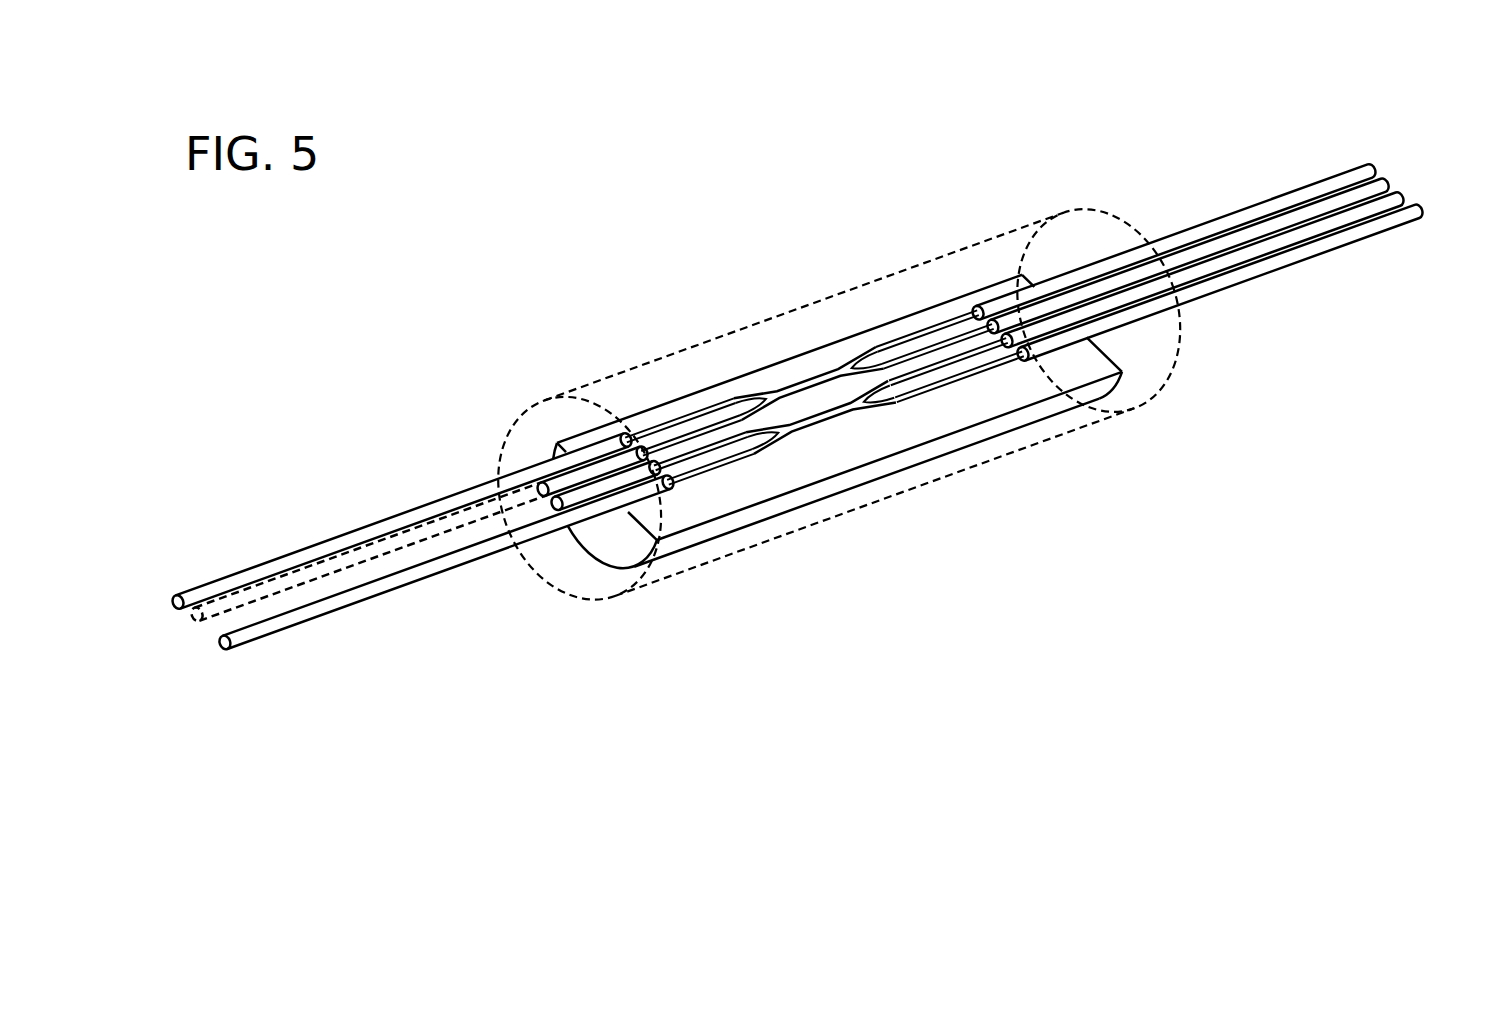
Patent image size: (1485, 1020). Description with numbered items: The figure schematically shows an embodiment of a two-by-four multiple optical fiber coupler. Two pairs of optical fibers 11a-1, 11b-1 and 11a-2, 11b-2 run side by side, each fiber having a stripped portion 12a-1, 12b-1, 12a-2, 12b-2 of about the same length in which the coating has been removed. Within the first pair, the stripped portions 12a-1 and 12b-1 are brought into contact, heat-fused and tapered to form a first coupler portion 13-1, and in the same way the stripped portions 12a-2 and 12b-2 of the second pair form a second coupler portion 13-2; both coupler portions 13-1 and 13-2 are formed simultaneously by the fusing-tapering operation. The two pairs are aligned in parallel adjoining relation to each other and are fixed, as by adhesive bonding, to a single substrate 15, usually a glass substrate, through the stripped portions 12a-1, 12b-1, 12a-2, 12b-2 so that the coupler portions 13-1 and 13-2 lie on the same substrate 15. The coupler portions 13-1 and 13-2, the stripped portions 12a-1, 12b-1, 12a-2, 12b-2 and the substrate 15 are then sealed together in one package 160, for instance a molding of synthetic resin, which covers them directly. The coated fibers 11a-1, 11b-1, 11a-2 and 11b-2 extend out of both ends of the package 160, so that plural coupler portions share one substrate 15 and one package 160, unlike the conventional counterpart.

The optical fiber 11a-1 is at (257, 573).
The optical fiber 11b-1 is at (307, 573).
The optical fiber 11a-2 is at (352, 578).
The optical fiber 11b-2 is at (420, 573).
The stripped portion 12a-1 is at (662, 428).
The stripped portion 12b-1 is at (733, 422).
The stripped portion 12a-2 is at (700, 453).
The stripped portion 12b-2 is at (782, 445).
The coupler portion 13-1 is at (786, 390).
The coupler portion 13-2 is at (825, 420).
The substrate 15 is at (1120, 392).
The package 160 is at (512, 425).